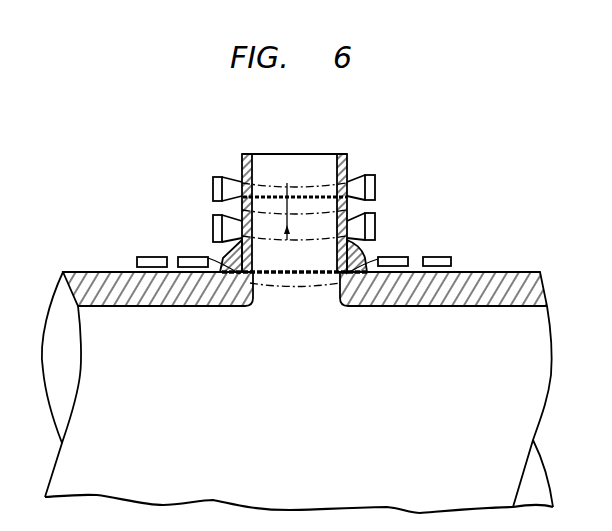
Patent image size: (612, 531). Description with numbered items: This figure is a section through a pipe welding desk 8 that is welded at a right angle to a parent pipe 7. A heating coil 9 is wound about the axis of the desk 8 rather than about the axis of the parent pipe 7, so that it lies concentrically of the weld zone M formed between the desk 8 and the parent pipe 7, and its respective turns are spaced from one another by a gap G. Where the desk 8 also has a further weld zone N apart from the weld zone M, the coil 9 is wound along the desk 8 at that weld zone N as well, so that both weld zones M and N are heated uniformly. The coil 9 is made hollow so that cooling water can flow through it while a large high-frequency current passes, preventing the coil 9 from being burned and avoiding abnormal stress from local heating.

The parent pipe 7 is at (89, 274).
The pipe welding desk 8 is at (243, 155).
The weld zone N is at (376, 189).
The heating coil 9 is at (376, 228).
The weld zone M is at (352, 271).
The gap G is at (278, 215).